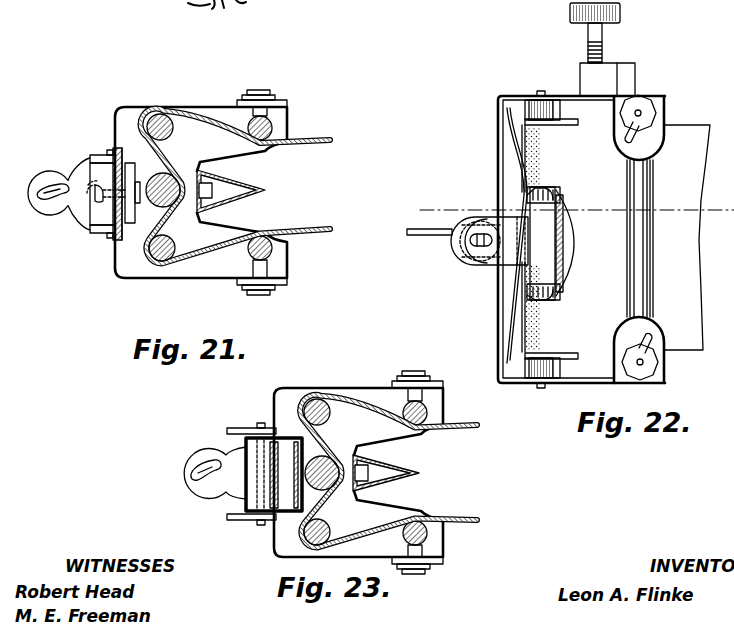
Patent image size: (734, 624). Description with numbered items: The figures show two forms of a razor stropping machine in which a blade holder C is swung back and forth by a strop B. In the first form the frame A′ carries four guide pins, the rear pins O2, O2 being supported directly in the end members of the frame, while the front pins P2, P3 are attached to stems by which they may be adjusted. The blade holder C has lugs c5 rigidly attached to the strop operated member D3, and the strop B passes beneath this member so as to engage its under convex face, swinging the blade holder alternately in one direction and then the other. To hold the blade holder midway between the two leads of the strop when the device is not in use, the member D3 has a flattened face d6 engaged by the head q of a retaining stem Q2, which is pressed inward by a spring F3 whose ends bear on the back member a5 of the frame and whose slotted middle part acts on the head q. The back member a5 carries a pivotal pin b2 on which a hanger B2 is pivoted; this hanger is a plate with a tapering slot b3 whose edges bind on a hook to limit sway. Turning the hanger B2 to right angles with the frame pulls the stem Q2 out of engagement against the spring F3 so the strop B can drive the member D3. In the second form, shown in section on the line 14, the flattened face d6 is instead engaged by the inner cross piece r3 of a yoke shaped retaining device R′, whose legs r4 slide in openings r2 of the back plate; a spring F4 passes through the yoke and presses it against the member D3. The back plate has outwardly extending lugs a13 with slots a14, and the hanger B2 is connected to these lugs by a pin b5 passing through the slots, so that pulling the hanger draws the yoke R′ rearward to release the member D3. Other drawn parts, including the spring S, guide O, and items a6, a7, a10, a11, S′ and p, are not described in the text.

In FIG. 21, the frame A′ is at (201, 177).
In FIG. 22, the frame A′ is at (561, 239).
In FIG. 23, the frame A′ is at (283, 553).
In FIG. 21, the guide pins O2 is at (162, 118).
In FIG. 21, the strop operated member D3 is at (171, 176).
In FIG. 22, the strop operated member D3 is at (546, 232).
In FIG. 23, the strop operated member D3 is at (333, 458).
In FIG. 21, the lugs c5 is at (180, 214).
In FIG. 21, the blade holder C is at (254, 184).
In FIG. 22, the blade holder C is at (592, 78).
In FIG. 23, the blade holder C is at (405, 467).
In FIG. 21, the spring S is at (214, 195).
In FIG. 23, the spring S is at (372, 478).
In FIG. 21, the guide pin P2 is at (268, 127).
In FIG. 22, the guide pin P2 is at (646, 282).
In FIG. 23, the guide pin P2 is at (428, 412).
In FIG. 21, the guide pin P3 is at (268, 250).
In FIG. 23, the guide pin P3 is at (429, 537).
In FIG. 21, the strop B is at (326, 144).
In FIG. 22, the strop B is at (689, 181).
In FIG. 23, the strop B is at (476, 430).
In FIG. 21, the spring F3 is at (120, 243).
In FIG. 21, the back member a5 is at (116, 233).
In FIG. 21, the head q is at (140, 197).
In FIG. 21, the flattened face d6 is at (143, 177).
In FIG. 22, the flattened face d6 is at (538, 266).
In FIG. 21, the flange plate a10 is at (92, 160).
In FIG. 21, the pivotal pin b2 is at (108, 151).
In FIG. 21, the hanger B2 is at (74, 219).
In FIG. 22, the hanger B2 is at (418, 236).
In FIG. 23, the hanger B2 is at (202, 490).
In FIG. 21, the retaining stem Q2 is at (97, 205).
In FIG. 21, the tapering slot b3 is at (56, 192).
In FIG. 23, the tapering slot b3 is at (196, 471).
In FIG. 22, the side plate a6 is at (520, 96).
In FIG. 22, the bearing block a7 is at (575, 382).
In FIG. 22, the adjusting screw S′ is at (603, 47).
In FIG. 22, the cam p is at (650, 115).
In FIG. 22, the section line 14 is at (566, 208).
In FIG. 22, the yoke shaped retaining device R′ is at (529, 195).
In FIG. 23, the yoke shaped retaining device R′ is at (288, 512).
In FIG. 22, the spring F4 is at (504, 300).
In FIG. 23, the spring F4 is at (286, 440).
In FIG. 22, the pin b5 is at (485, 232).
In FIG. 23, the pin b5 is at (259, 423).
In FIG. 22, the slots a14 is at (470, 244).
In FIG. 22, the lugs a13 is at (468, 263).
In FIG. 23, the lugs a13 is at (230, 431).
In FIG. 23, the guide rollers O is at (323, 404).
In FIG. 23, the cross piece r3 is at (308, 498).
In FIG. 23, the legs r4 is at (291, 446).
In FIG. 23, the openings r2 is at (246, 428).
In FIG. 23, the arm a11 is at (268, 463).